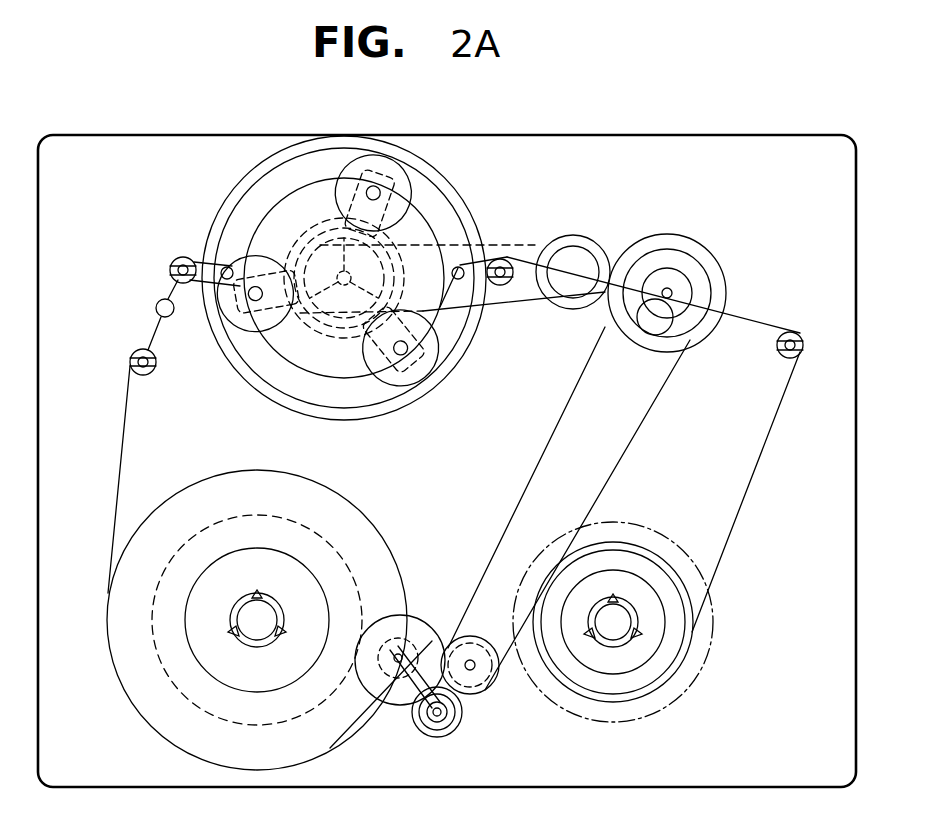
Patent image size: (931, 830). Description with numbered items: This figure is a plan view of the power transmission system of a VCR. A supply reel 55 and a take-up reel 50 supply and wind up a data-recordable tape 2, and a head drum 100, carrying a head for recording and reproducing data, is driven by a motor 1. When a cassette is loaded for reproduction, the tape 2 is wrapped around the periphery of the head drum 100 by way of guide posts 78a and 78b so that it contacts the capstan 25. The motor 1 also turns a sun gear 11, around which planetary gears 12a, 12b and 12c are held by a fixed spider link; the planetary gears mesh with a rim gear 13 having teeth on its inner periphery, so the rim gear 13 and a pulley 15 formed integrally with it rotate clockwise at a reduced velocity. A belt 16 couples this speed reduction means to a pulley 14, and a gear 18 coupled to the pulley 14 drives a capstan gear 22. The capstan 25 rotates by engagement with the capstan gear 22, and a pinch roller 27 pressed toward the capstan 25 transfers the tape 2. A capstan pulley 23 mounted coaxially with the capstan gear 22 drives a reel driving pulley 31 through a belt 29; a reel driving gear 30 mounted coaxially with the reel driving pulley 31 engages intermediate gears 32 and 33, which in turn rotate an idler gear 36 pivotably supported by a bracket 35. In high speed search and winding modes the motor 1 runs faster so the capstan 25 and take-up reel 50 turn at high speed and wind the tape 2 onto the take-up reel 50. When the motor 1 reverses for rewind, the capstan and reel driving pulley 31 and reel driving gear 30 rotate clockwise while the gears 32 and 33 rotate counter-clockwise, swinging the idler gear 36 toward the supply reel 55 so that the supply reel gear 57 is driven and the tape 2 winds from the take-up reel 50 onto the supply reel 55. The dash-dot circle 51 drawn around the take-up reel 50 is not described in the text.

The motor 1 is at (342, 262).
The data-recordable tape 2 is at (122, 478).
The sun gear 11 is at (297, 352).
The planetary gear 12a is at (417, 370).
The planetary gear 12b is at (222, 306).
The planetary gear 12c is at (378, 170).
The rim gear 13 is at (254, 378).
The pulley 14 is at (585, 252).
The pulley 15 is at (345, 266).
The belt 16 is at (511, 308).
The gear 18 is at (569, 306).
The capstan gear 22 is at (703, 252).
The capstan pulley 23 is at (707, 287).
The capstan 25 is at (668, 288).
The pinch roller 27 is at (650, 331).
The belt 29 is at (520, 500).
The reel driving gear 30 is at (478, 695).
The reel driving pulley 31 is at (488, 688).
The intermediate gear 32 is at (450, 724).
The intermediate gear 33 is at (435, 737).
The bracket 35 is at (394, 696).
The idler gear 36 is at (424, 634).
The take-up reel 50 is at (630, 698).
The belt path 51 is at (688, 688).
The supply reel 55 is at (188, 656).
The supply reel gear 57 is at (306, 710).
The guide post 78a is at (190, 258).
The guide post 78b is at (490, 246).
The head drum 100 is at (432, 222).